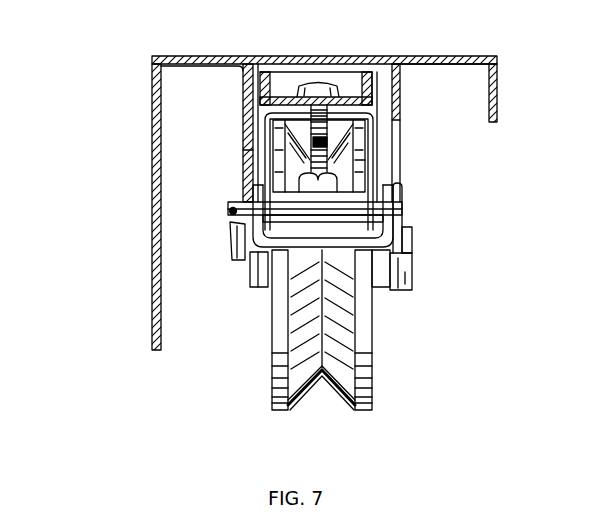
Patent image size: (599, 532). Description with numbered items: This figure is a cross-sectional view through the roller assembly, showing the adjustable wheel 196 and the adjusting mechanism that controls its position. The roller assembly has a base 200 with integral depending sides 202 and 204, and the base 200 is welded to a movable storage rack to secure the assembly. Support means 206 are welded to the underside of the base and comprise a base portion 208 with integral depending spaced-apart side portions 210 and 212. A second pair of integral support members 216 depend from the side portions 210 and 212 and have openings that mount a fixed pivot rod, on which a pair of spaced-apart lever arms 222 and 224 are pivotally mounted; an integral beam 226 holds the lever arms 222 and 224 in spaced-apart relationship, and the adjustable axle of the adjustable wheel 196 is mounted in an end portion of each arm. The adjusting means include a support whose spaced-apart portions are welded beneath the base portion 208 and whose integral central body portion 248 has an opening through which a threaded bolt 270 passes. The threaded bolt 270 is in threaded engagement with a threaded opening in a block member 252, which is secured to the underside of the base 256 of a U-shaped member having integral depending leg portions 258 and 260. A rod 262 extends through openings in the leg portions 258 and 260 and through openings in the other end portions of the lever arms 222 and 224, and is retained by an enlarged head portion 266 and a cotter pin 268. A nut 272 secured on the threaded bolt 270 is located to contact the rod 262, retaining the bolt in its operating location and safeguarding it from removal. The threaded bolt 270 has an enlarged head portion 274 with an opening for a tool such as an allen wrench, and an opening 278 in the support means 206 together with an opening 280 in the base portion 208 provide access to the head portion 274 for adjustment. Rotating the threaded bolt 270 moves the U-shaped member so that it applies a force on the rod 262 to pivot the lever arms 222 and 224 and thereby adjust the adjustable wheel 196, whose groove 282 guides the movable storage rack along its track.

The adjustable wheel 196 is at (372, 362).
The base 200 is at (192, 56).
The depending side 202 is at (152, 280).
The depending side 204 is at (498, 96).
The support means 206 is at (200, 71).
The base portion 208 is at (396, 56).
The side portion 210 is at (398, 110).
The side portion 212 is at (240, 94).
The second pair of integral support members 216 is at (247, 157).
The lever arm 222 is at (385, 210).
The lever arm 224 is at (242, 193).
The integral beam 226 is at (278, 258).
The central body portion 248 is at (285, 97).
The block member 252 is at (343, 125).
The base of U-shaped member 256 is at (277, 73).
The leg portion 258 is at (265, 135).
The leg portion 260 is at (332, 191).
The rod 262 is at (338, 214).
The enlarged head portion 266 is at (408, 249).
The cotter pin 268 is at (232, 213).
The threaded bolt 270 is at (356, 166).
The nut 272 is at (388, 193).
The enlarged head portion 274 is at (320, 84).
The opening 278 is at (376, 78).
The opening 280 is at (380, 80).
The groove 282 is at (318, 392).